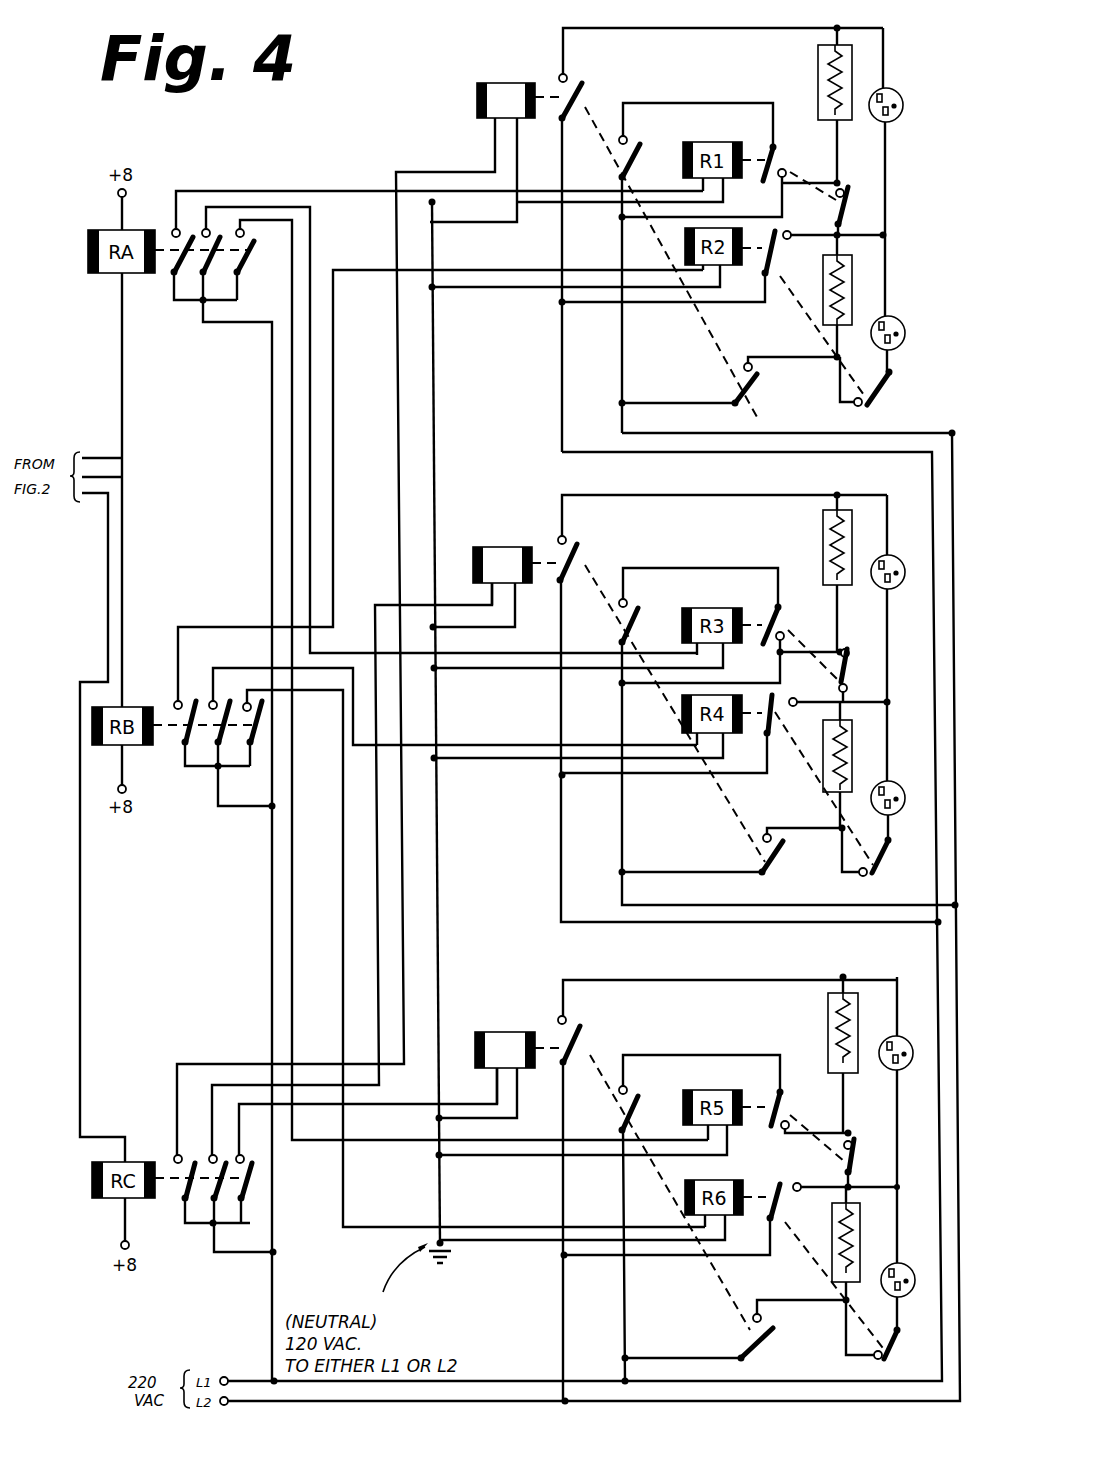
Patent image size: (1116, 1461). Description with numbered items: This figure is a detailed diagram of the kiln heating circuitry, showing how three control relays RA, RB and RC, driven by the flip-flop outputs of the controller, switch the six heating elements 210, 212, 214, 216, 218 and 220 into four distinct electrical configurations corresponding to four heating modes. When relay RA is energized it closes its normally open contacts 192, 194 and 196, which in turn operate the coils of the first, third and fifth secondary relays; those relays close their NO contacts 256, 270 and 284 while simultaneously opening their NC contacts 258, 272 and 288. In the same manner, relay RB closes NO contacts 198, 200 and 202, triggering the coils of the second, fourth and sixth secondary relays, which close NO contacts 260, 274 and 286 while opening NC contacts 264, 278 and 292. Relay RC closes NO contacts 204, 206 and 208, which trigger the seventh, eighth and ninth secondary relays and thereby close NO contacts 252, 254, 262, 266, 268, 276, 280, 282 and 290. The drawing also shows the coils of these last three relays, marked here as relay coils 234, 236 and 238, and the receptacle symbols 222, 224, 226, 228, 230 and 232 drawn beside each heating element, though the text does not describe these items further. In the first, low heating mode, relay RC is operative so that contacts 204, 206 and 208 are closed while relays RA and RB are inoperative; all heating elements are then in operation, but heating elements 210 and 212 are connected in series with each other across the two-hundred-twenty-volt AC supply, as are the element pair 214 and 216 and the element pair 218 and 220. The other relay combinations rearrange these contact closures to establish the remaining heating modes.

The NO contact 192 is at (170, 225).
The NO contact 194 is at (210, 226).
The NO contact 196 is at (246, 228).
The NO contact 198 is at (173, 704).
The NO contact 200 is at (213, 700).
The NO contact 202 is at (262, 722).
The NO contact 204 is at (170, 1162).
The NO contact 206 is at (208, 1160).
The NO contact 208 is at (257, 1175).
The heating element 210 is at (818, 70).
The heating element 212 is at (822, 306).
The heating element 214 is at (820, 532).
The heating element 216 is at (822, 745).
The heating element 218 is at (826, 1020).
The heating element 220 is at (830, 1238).
The receptacle outlet 222 is at (897, 96).
The receptacle outlet 224 is at (901, 327).
The receptacle outlet 226 is at (897, 557).
The receptacle outlet 228 is at (897, 784).
The receptacle outlet 230 is at (906, 1043).
The receptacle outlet 232 is at (906, 1268).
The relay R7 234 is at (517, 72).
The relay R8 236 is at (513, 536).
The relay R9 238 is at (516, 1020).
The NO contact 252 is at (575, 84).
The NO contact 254 is at (633, 140).
The NO contact 256 is at (781, 170).
The NC contact 258 is at (861, 211).
The NO contact 260 is at (786, 236).
The NO contact 262 is at (774, 387).
The NC contact 264 is at (870, 394).
The NO contact 266 is at (576, 546).
The NO contact 268 is at (633, 610).
The NO contact 270 is at (781, 630).
The NC contact 272 is at (850, 662).
The NO contact 274 is at (780, 738).
The NO contact 276 is at (790, 868).
The NC contact 278 is at (905, 866).
The NO contact 280 is at (577, 1036).
The NO contact 282 is at (632, 1095).
The NO contact 284 is at (795, 1126).
The NO contact 286 is at (797, 1168).
The NC contact 288 is at (879, 1138).
The NO contact 290 is at (790, 1352).
The NC contact 292 is at (910, 1352).